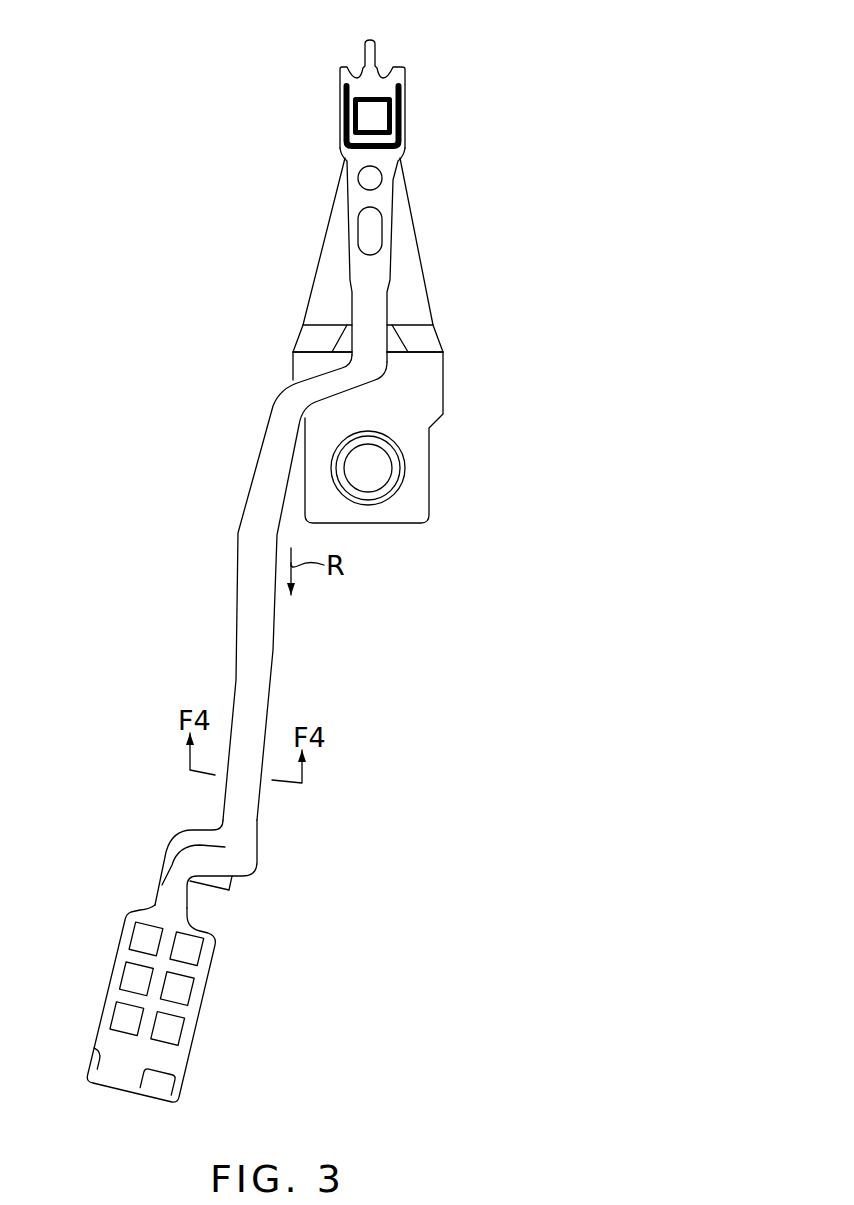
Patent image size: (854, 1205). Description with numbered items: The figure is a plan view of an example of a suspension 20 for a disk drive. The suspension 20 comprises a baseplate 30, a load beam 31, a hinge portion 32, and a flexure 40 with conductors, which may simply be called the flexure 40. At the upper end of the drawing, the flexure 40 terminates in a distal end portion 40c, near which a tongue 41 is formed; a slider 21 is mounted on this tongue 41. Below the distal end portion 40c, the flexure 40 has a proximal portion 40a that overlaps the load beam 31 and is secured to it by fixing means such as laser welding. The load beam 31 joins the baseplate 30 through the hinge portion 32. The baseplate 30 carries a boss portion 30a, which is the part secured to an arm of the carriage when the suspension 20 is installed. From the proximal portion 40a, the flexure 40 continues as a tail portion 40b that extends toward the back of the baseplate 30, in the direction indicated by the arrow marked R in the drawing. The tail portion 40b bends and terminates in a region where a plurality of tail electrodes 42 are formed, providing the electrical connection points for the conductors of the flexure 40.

The suspension 20 is at (220, 325).
The slider 21 is at (363, 116).
The baseplate 30 is at (430, 390).
The boss portion 30a is at (398, 470).
The load beam 31 is at (408, 263).
The hinge portion 32 is at (427, 341).
The flexure 40 is at (237, 535).
The proximal portion 40a is at (360, 200).
The tail portion 40b is at (253, 817).
The distal end portion 40c is at (399, 73).
The tongue 41 is at (374, 140).
The tail electrodes 42 is at (122, 1022).